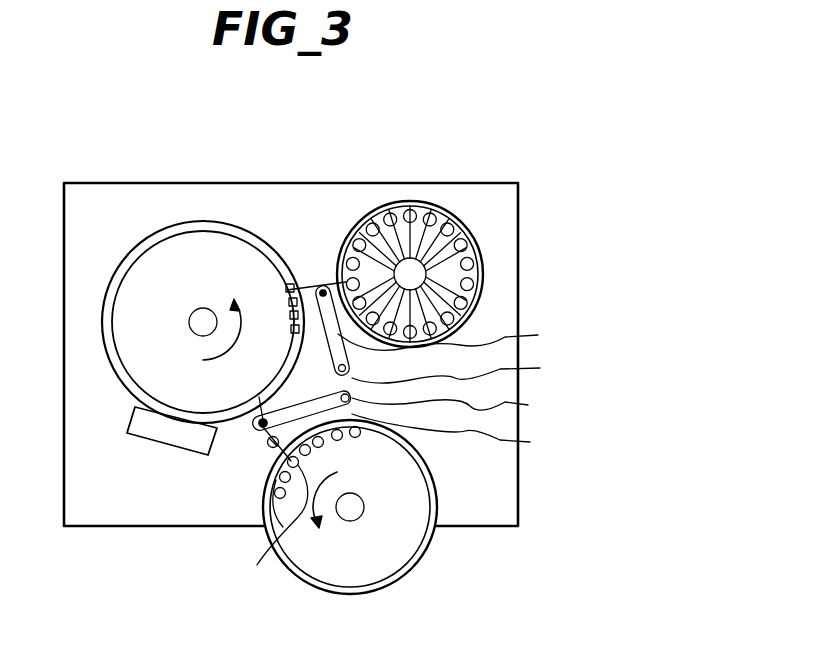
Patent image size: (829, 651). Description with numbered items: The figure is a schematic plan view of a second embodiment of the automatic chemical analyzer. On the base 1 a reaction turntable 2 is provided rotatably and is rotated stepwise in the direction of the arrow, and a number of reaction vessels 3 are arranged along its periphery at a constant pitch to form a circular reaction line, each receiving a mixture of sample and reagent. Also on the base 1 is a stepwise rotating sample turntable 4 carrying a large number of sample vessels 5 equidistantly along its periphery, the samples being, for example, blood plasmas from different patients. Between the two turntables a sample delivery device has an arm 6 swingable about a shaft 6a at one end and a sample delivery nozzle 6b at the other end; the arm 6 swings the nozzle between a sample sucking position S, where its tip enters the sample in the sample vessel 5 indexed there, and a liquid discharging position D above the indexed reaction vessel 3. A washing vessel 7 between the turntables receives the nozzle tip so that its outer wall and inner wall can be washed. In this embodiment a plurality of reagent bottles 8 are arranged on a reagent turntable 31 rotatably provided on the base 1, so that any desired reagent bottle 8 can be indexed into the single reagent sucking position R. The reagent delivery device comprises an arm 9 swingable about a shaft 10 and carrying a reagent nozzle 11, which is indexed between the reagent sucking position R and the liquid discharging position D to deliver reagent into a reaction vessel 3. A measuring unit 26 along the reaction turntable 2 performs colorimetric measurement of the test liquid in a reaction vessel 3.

The base 1 is at (120, 183).
The reaction turntable 2 is at (185, 221).
The reaction vessels 3 is at (285, 289).
The liquid discharging position D is at (297, 286).
The reagent nozzle 11 is at (318, 291).
The reagent sucking position R is at (327, 288).
The reagent bottles 8 is at (410, 203).
The reagent turntable 31 is at (453, 210).
The arm 9 is at (450, 336).
The shaft 10 is at (461, 369).
The shaft 6a is at (410, 410).
The arm 6 is at (452, 437).
The measuring unit 26 is at (128, 428).
The sample delivery nozzle 6b is at (262, 425).
The washing vessel 7 is at (270, 445).
The sample vessels 5 is at (280, 466).
The sample sucking position S is at (297, 510).
The sample turntable 4 is at (296, 572).